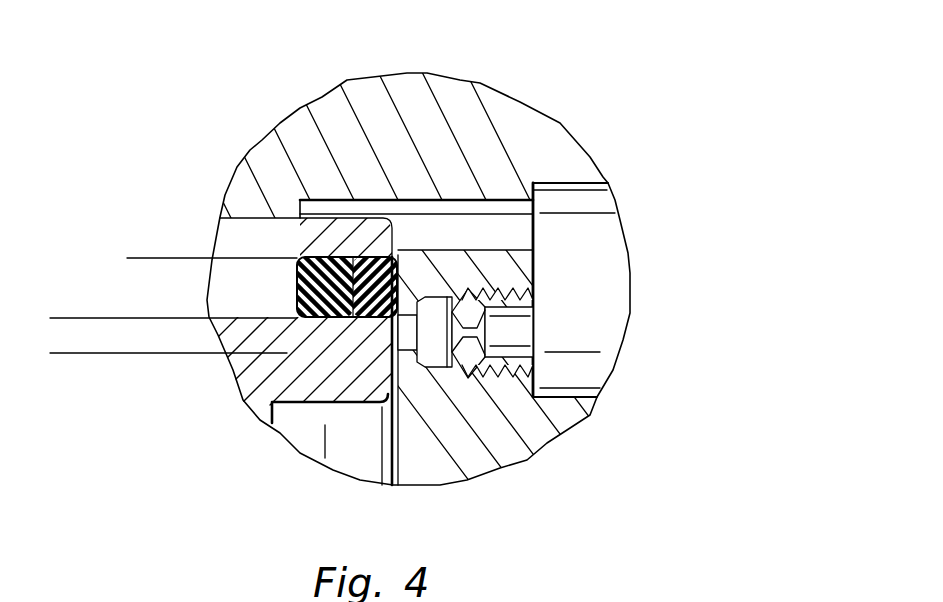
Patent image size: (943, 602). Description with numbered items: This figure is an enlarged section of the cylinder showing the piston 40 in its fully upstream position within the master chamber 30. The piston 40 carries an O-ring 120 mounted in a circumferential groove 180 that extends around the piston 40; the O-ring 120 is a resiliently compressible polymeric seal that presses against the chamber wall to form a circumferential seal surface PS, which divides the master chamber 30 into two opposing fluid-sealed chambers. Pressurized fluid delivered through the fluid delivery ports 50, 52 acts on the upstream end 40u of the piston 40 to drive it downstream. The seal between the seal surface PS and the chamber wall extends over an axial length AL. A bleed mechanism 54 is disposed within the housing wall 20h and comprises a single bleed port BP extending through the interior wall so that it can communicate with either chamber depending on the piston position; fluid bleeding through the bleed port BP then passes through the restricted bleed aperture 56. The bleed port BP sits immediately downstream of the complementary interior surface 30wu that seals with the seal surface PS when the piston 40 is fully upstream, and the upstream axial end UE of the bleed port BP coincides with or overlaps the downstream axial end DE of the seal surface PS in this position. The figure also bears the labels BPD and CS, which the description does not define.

The housing wall 20h is at (424, 95).
The master chamber 30 is at (308, 438).
The complementary interior surface 30wu is at (388, 200).
The piston 40 is at (223, 240).
The upstream end of piston 40u is at (352, 217).
The fluid delivery port 50 is at (608, 240).
The fluid delivery port 52 is at (493, 210).
The bleed mechanism 54 is at (462, 382).
The restricted bleed aperture 56 is at (538, 438).
The O-ring 120 is at (356, 254).
The circumferential groove 180 is at (245, 198).
The axial length AL is at (145, 257).
The dimension BPD is at (63, 400).
The upstream axial end of bleed port UE is at (145, 370).
The circumferential seal surface PS is at (486, 264).
The downstream axial end of seal surface DE is at (342, 407).
The contact step CS is at (399, 356).
The bleed port BP is at (416, 406).